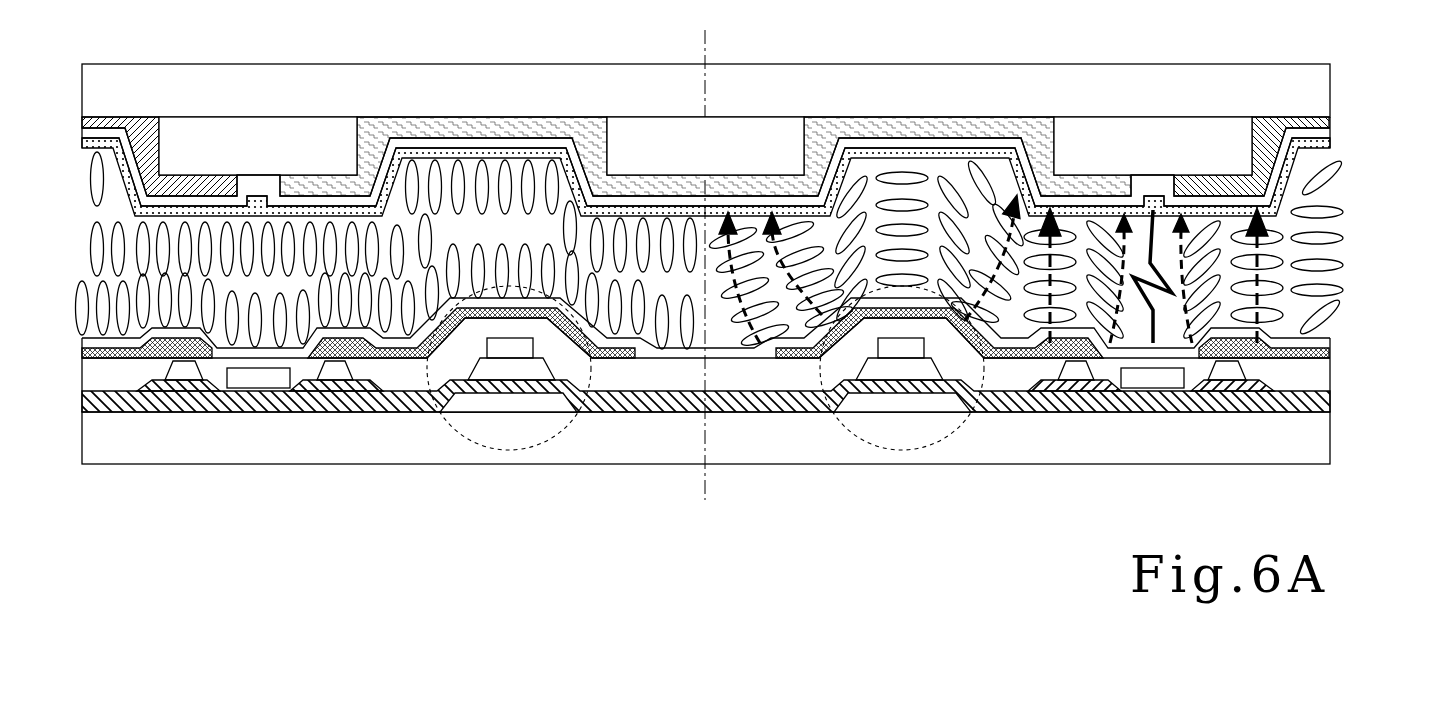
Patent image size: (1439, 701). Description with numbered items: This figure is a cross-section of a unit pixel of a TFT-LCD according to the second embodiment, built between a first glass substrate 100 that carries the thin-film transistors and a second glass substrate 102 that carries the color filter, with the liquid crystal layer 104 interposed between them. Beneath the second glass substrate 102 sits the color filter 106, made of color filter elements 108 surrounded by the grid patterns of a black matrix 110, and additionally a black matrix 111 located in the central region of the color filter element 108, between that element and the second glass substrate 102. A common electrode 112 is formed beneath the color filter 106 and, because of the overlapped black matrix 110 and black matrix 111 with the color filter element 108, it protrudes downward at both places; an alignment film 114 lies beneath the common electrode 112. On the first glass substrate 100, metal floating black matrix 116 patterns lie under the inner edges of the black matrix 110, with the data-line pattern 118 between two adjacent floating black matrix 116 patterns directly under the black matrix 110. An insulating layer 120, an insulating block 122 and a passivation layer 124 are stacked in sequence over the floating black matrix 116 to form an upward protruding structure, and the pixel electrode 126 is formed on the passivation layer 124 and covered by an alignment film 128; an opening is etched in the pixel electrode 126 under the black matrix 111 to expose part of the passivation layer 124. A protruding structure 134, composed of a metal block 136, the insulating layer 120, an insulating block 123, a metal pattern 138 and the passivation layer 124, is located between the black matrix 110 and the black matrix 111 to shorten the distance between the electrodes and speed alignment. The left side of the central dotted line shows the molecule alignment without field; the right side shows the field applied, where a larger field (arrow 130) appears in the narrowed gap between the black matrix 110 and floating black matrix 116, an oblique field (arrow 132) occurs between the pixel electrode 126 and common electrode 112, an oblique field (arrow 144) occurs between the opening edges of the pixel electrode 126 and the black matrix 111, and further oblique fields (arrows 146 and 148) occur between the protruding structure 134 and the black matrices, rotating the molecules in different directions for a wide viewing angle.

The first glass substrate 100 is at (1330, 442).
The second glass substrate 102 is at (1332, 83).
The liquid crystal layer 104 is at (1343, 294).
The color filter 106 is at (1330, 122).
The color filter element 108 is at (590, 140).
The black matrix 110 is at (240, 156).
The black matrix 111 is at (687, 156).
The common electrode 112 is at (1330, 140).
The alignment film 114 is at (1330, 150).
The floating black matrix 116 is at (705, 396).
The data-line pattern 118 is at (705, 379).
The insulating layer 120 is at (1330, 405).
The insulating block 122 is at (705, 372).
The insulating block 123 is at (705, 370).
The passivation layer 124 is at (1330, 383).
The pixel electrode 126 is at (1330, 356).
The alignment film 128 is at (1330, 344).
The arrow 130 is at (1050, 204).
The arrow 132 is at (1124, 210).
The protruding structure 134 is at (543, 446).
The metal block 136 is at (705, 403).
The metal pattern 138 is at (705, 349).
The arrow 144 is at (728, 208).
The arrow 146 is at (772, 208).
The arrow 148 is at (1017, 192).